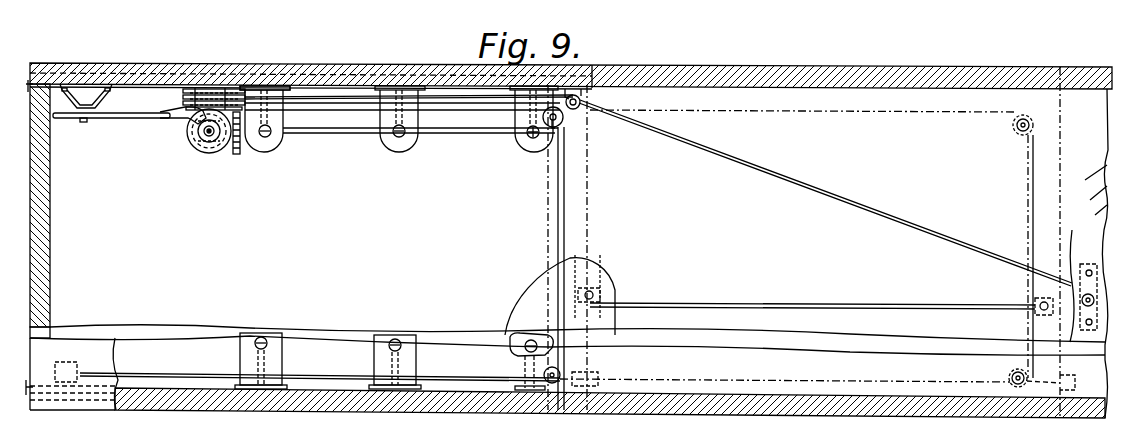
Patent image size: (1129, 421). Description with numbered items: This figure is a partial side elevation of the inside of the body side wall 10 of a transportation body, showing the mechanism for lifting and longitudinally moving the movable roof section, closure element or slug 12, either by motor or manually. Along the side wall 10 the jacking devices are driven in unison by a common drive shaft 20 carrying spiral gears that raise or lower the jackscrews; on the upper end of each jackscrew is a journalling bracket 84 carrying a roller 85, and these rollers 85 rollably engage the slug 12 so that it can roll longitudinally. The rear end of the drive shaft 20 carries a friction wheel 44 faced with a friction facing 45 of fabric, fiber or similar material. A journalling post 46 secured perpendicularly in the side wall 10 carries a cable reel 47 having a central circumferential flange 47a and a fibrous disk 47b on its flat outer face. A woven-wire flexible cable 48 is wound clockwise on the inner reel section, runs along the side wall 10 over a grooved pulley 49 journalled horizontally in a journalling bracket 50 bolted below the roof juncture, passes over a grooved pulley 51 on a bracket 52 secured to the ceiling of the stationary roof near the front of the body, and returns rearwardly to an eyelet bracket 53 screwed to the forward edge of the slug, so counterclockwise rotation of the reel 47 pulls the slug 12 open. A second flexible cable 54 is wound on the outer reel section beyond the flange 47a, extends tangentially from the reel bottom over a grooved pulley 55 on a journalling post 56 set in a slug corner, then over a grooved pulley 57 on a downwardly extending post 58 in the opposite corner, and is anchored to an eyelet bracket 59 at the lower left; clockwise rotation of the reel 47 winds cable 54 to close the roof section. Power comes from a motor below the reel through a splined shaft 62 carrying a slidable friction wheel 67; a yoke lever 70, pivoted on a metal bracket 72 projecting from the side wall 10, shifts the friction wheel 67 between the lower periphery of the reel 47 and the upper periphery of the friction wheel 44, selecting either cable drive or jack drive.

The side wall 10 is at (366, 63).
The movable closure element or slug 12 is at (500, 361).
The common drive shaft 20 is at (433, 134).
The friction wheel 44 is at (240, 130).
The friction facing 45 is at (231, 155).
The journalling post 46 is at (250, 86).
The cable reel 47 is at (197, 88).
The circumferential flange 47a is at (190, 90).
The fibrous disk 47b is at (160, 113).
The flexible cable 48 is at (320, 96).
The grooved pulley 49 is at (598, 107).
The journalling bracket 50 is at (583, 88).
The grooved pulley 51 is at (1063, 320).
The bracket 52 is at (1082, 274).
The eyelet bracket 53 is at (598, 287).
The flexible cable 54 is at (346, 112).
The grooved pulley 55 is at (568, 124).
The journalling post 56 is at (565, 117).
The grooved pulley 57 is at (600, 376).
The downwardly extending post 58 is at (560, 367).
The eyelet bracket 59 is at (72, 365).
The splined shaft 62 is at (193, 140).
The friction wheel 67 is at (197, 148).
The yoke lever 70 is at (97, 120).
The metal bracket 72 is at (96, 103).
The journalling bracket 84 is at (530, 139).
The roller 85 is at (273, 132).